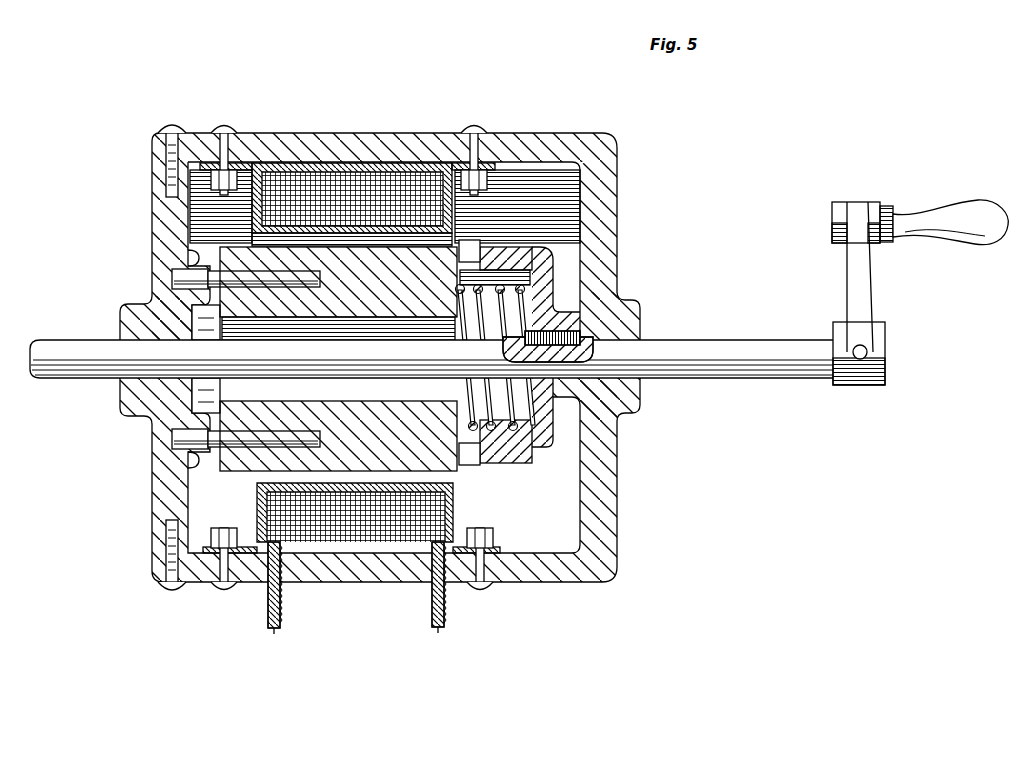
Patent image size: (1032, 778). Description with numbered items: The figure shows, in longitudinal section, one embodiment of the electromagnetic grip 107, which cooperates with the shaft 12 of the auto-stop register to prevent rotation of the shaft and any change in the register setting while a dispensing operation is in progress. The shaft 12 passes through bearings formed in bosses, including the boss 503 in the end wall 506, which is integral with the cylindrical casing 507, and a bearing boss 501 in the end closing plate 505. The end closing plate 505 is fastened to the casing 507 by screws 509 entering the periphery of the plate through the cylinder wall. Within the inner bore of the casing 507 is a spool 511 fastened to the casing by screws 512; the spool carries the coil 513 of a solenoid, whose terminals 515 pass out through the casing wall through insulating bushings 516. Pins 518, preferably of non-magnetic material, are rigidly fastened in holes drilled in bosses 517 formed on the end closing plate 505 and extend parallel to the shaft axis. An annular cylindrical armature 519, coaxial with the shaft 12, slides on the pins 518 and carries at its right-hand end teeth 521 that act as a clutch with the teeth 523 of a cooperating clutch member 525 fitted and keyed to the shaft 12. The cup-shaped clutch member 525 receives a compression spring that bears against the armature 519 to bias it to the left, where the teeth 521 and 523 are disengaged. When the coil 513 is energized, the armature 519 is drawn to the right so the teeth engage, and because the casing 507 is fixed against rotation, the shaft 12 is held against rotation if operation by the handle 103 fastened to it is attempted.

The electromagnetic grip 107 is at (386, 131).
The shaft 12 is at (757, 341).
The handle 103 is at (862, 286).
The bearing boss 501 is at (124, 302).
The boss 503 is at (630, 406).
The end closing plate 505 is at (150, 186).
The end wall 506 is at (605, 224).
The casing 507 is at (333, 137).
The screws 509 is at (172, 122).
The spool 511 is at (265, 166).
The screws 512 is at (484, 124).
The coil 513 is at (400, 183).
The terminals 515 is at (283, 626).
The insulating bushings 516 is at (283, 578).
The bosses 517 is at (192, 256).
The pins 518 is at (176, 279).
The armature 519 is at (338, 359).
The teeth 521 is at (465, 252).
The teeth 523 is at (497, 248).
The clutch member 525 is at (548, 455).